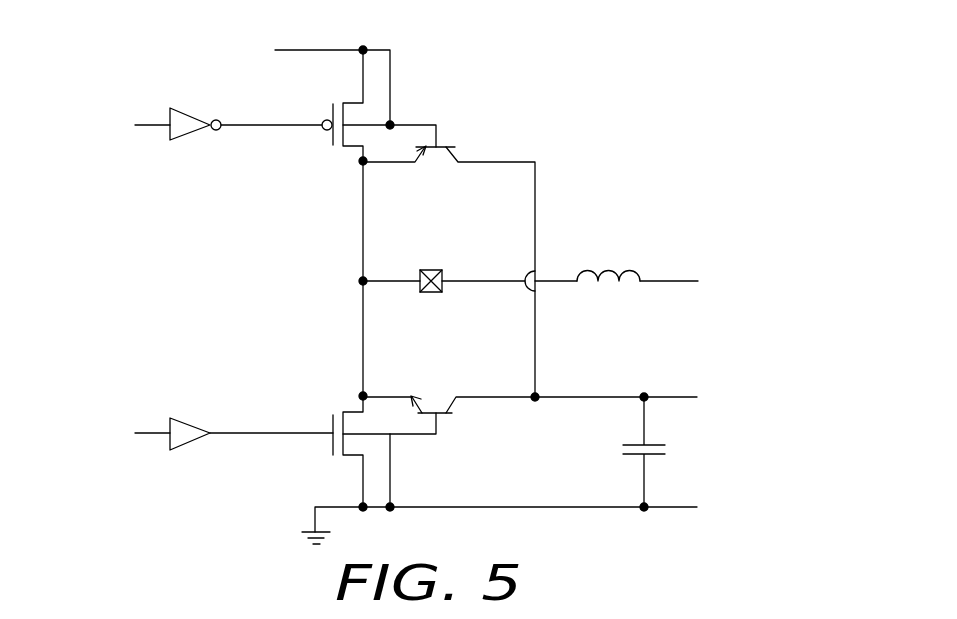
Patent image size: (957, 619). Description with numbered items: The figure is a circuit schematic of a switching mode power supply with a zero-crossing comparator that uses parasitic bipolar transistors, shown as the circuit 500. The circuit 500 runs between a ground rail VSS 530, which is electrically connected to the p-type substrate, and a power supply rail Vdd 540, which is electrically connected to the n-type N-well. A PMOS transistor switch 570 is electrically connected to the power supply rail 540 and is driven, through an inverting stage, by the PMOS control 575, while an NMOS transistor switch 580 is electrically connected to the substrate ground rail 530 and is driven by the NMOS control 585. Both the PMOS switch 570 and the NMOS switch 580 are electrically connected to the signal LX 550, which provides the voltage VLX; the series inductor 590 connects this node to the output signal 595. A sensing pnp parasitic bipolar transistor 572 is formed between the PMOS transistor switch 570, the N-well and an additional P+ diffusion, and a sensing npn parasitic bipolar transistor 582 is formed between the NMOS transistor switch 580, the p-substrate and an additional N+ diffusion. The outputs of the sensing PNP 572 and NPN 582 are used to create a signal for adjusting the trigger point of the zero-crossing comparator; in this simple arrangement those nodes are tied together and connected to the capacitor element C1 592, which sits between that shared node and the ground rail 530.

The circuit 500 is at (133, 265).
The ground rail VSS 530 is at (290, 531).
The power supply rail Vdd 540 is at (317, 25).
The signal LX 550 is at (458, 249).
The PMOS transistor switch 570 is at (322, 88).
The sensing pnp parasitic bipolar transistor 572 is at (480, 124).
The PMOS control 575 is at (107, 105).
The NMOS transistor switch 580 is at (322, 395).
The sensing npn parasitic bipolar transistor 582 is at (480, 437).
The NMOS control 585 is at (107, 415).
The series inductor 590 is at (610, 291).
The capacitor element C1 592 is at (694, 446).
The output signal 595 is at (735, 266).